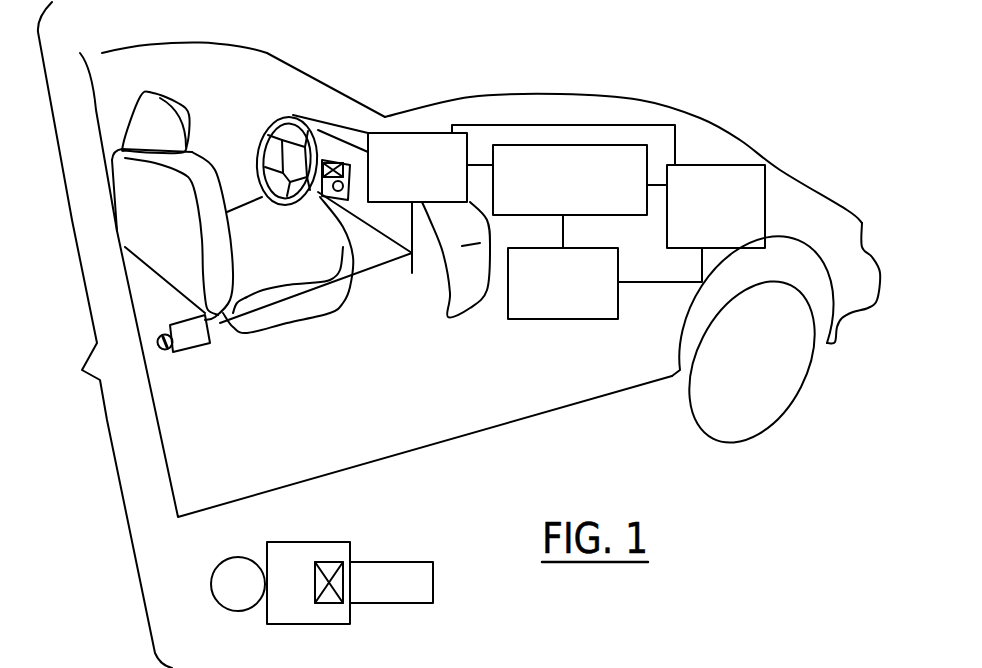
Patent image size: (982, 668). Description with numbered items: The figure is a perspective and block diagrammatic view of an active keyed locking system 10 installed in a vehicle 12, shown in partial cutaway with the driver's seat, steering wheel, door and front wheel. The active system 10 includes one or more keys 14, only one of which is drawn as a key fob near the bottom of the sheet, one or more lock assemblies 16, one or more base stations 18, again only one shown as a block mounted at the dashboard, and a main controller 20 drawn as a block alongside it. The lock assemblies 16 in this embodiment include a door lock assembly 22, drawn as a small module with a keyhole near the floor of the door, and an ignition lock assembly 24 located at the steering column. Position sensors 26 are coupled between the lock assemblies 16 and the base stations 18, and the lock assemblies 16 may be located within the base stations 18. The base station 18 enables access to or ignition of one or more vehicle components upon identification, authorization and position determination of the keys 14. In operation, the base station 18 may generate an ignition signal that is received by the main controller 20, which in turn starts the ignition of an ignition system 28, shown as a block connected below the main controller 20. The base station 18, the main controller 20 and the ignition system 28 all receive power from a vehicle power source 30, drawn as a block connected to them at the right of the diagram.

The active keyed locking system 10 is at (476, 87).
The vehicle 12 is at (273, 55).
The key 14 is at (333, 542).
The lock assembly 16 is at (264, 200).
The base station 18 is at (421, 133).
The main controller 20 is at (623, 215).
The door lock assembly 22 is at (158, 349).
The ignition lock assembly 24 is at (327, 198).
The position sensor 26 is at (333, 160).
The ignition system 28 is at (583, 319).
The vehicle power source 30 is at (723, 165).